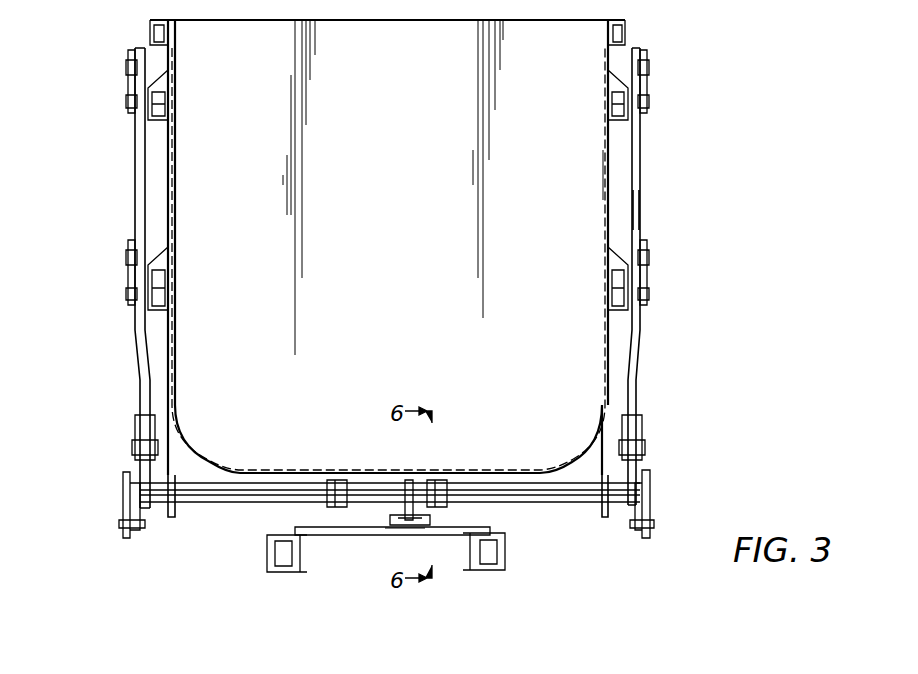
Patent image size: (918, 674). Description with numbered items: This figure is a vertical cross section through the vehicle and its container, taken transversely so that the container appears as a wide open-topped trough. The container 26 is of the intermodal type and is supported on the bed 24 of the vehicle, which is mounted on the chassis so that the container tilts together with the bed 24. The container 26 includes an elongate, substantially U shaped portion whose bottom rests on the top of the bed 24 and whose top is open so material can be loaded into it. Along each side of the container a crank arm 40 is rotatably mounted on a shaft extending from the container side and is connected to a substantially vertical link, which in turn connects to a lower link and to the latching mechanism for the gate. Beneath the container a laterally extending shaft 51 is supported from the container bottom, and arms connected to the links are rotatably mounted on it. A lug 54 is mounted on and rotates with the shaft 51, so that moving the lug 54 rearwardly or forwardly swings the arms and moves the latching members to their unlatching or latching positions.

The bed 24 is at (488, 527).
The container 26 is at (160, 180).
The crank arm 40 is at (637, 86).
The shaft 51 is at (212, 498).
The lug 54 is at (412, 480).